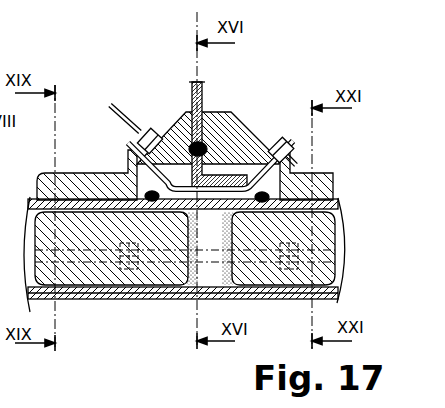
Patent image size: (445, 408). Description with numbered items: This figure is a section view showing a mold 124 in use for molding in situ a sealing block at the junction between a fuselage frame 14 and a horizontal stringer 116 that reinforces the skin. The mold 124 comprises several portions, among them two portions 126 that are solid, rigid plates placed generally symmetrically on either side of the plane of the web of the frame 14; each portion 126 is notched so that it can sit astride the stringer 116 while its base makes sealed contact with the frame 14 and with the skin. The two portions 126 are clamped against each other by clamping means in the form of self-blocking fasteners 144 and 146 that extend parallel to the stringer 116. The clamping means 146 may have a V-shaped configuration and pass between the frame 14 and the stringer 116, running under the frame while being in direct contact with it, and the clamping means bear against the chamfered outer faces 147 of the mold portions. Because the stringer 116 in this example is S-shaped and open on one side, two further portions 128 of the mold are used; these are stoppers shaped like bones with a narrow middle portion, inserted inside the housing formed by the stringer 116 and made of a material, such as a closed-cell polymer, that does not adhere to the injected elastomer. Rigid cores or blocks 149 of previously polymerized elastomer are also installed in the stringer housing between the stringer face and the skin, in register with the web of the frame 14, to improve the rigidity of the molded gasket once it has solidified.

The frame 14 is at (200, 100).
The stringer 116 is at (82, 203).
The mold 124 is at (15, 8).
The mold portion 126 is at (158, 122).
The stopper portion 128 is at (336, 203).
The self-blocking fastener 144 is at (157, 257).
The V-shaped clamping means 146 is at (283, 165).
The chamfered outer face 147 is at (148, 112).
The rigid core block 149 is at (223, 264).